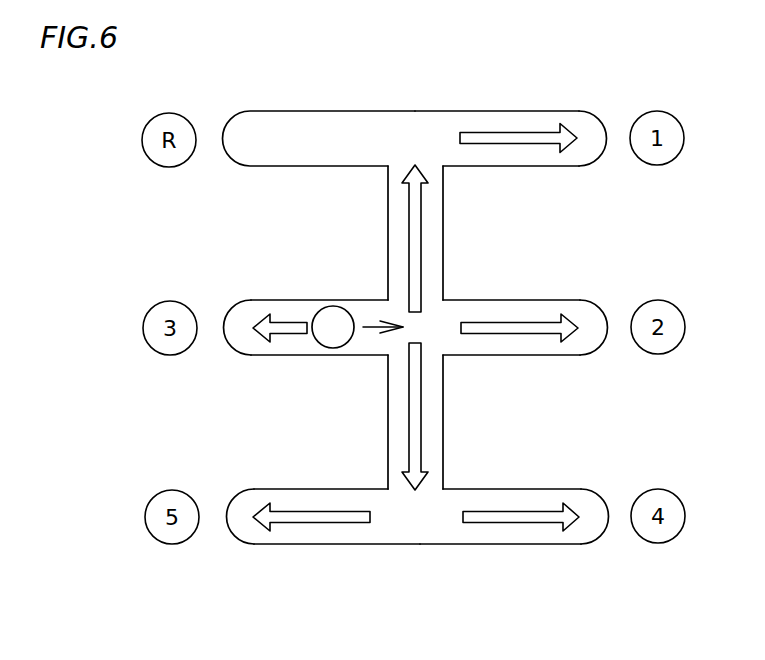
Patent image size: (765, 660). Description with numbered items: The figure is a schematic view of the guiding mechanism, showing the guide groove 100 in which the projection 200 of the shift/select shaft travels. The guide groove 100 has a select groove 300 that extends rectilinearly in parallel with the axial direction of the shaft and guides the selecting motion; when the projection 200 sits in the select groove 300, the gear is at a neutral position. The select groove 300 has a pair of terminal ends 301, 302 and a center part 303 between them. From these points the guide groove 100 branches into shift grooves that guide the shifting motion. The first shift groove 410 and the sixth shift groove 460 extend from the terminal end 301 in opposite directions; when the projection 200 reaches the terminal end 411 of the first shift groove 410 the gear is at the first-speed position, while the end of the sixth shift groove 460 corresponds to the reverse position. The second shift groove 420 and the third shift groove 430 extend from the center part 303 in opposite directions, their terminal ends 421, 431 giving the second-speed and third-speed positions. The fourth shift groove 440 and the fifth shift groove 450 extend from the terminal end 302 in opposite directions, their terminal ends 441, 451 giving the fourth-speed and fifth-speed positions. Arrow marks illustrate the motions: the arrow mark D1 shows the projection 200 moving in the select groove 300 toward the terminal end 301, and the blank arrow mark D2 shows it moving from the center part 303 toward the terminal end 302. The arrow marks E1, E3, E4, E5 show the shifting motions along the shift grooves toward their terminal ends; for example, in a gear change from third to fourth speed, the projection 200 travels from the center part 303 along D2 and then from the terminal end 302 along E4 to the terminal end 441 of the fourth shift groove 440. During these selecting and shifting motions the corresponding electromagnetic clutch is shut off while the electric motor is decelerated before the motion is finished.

The guide groove 100 is at (375, 533).
The projection 200 is at (330, 318).
The select groove 300 is at (434, 199).
The terminal end 301 is at (415, 140).
The terminal end 302 is at (433, 518).
The center part 303 is at (423, 327).
The first shift groove 410 is at (530, 118).
The terminal end 411 is at (593, 137).
The second shift groove 420 is at (530, 305).
The terminal end 421 is at (594, 325).
The third shift groove 430 is at (278, 308).
The terminal end 431 is at (247, 337).
The fourth shift groove 440 is at (533, 495).
The terminal end 441 is at (596, 515).
The fifth shift groove 450 is at (308, 532).
The terminal end 451 is at (243, 535).
The sixth shift groove 460 is at (288, 130).
The arrow mark E1 is at (497, 135).
The arrow mark E3 is at (497, 320).
The blank arrow mark E4 is at (497, 510).
The arrow mark E5 is at (320, 510).
The arrow mark D1 is at (409, 210).
The blank arrow mark D2 is at (409, 388).